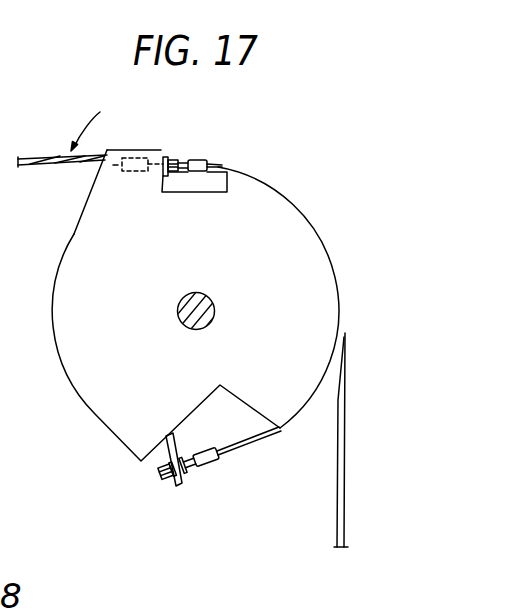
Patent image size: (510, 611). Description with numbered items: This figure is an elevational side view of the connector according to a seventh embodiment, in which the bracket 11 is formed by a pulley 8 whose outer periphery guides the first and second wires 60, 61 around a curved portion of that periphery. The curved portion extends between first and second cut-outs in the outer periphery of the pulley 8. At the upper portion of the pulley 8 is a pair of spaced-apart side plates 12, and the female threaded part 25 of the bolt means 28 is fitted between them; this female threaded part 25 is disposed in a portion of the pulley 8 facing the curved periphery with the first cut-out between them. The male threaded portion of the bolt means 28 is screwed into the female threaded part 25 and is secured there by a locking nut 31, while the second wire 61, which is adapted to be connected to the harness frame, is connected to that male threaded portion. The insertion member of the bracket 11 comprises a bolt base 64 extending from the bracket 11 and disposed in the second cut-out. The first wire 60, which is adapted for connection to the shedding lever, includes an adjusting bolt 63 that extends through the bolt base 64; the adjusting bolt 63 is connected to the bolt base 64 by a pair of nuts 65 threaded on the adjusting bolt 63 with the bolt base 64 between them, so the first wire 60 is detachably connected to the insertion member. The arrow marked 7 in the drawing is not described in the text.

The view direction arrow 7 is at (91, 128).
The pulley 8 is at (112, 402).
The bracket 11 is at (84, 188).
The side plates 12 is at (160, 151).
The female threaded part 25 is at (133, 172).
The bolt means 28 is at (187, 169).
The locking nut 31 is at (171, 177).
The first wire 60 is at (37, 158).
The second wire 61 is at (218, 163).
The adjusting bolt 63 is at (161, 474).
The bolt base 64 is at (182, 478).
The nuts 65 is at (168, 480).